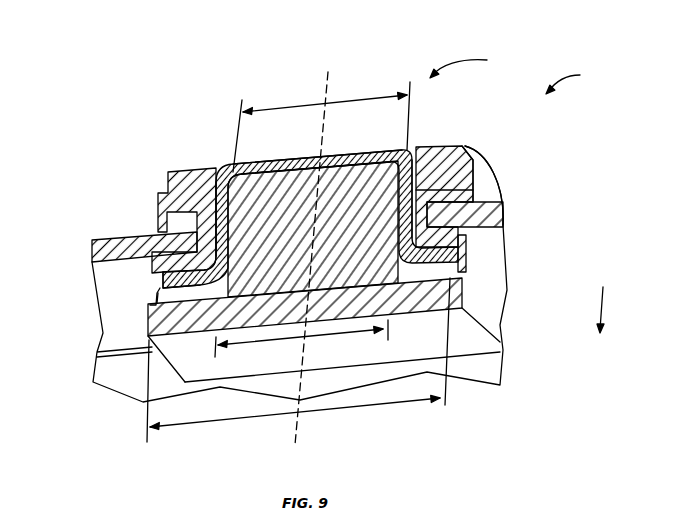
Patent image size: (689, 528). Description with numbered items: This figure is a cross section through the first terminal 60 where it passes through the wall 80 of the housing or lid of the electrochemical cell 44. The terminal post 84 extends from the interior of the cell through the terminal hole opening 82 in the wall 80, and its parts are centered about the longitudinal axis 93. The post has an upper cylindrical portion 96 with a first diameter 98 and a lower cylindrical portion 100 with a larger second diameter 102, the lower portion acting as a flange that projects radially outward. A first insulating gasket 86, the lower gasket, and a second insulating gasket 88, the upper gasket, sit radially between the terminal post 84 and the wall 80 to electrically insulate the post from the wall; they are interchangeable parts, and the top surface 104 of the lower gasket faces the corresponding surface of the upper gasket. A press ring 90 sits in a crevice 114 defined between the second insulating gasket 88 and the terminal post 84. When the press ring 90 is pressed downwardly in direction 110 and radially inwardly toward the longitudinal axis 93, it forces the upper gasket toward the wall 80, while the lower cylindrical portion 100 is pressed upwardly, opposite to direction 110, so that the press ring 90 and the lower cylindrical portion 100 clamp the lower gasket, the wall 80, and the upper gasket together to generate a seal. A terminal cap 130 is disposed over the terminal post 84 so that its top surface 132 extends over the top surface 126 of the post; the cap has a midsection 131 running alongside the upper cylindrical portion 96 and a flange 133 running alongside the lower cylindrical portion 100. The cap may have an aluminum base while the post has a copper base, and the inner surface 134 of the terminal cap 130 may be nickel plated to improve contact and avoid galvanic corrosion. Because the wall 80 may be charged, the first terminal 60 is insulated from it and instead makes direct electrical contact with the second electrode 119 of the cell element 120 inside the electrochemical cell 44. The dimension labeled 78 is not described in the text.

The electrochemical cell 44 is at (574, 80).
The first terminal 60 is at (467, 64).
The width of core 78 is at (321, 127).
The wall 80 is at (142, 236).
The terminal hole opening 82 is at (412, 206).
The terminal post 84 is at (352, 272).
The first insulating gasket 86 is at (461, 248).
The second insulating gasket 88 is at (480, 171).
The press ring 90 is at (449, 147).
The longitudinal axis 93 is at (323, 95).
The upper cylindrical portion 96 is at (218, 184).
The first diameter 98 is at (322, 336).
The lower cylindrical portion 100 is at (160, 290).
The second diameter 102 is at (317, 408).
The top surface 104 is at (472, 159).
The direction 110 is at (604, 303).
The crevice 114 is at (415, 145).
The second electrode 119 is at (293, 331).
The cell element 120 is at (504, 334).
The top surface 126 is at (303, 152).
The terminal cap 130 is at (236, 167).
The midsection 131 is at (213, 223).
The top surface 132 is at (337, 152).
The flange 133 is at (163, 297).
The inner surface 134 is at (270, 170).